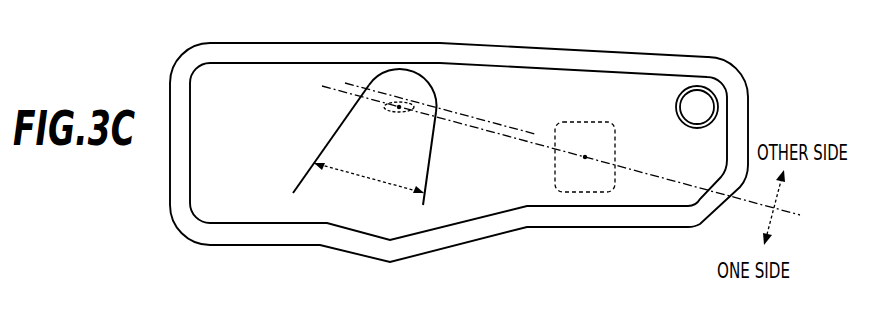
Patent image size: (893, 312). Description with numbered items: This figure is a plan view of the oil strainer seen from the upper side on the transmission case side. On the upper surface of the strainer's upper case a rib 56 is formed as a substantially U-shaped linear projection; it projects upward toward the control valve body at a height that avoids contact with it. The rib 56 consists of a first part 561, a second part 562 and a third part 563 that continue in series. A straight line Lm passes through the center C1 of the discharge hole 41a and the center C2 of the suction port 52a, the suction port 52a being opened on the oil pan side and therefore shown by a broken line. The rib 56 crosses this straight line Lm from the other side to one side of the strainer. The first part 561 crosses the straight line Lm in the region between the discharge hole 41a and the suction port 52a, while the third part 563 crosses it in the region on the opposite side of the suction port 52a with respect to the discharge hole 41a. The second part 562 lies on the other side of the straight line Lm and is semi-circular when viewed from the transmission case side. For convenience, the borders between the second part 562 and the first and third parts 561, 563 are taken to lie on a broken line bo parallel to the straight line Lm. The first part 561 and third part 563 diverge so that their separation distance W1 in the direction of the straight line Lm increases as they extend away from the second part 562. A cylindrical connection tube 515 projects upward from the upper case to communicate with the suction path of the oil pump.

The rib 56 is at (444, 81).
The second part 562 is at (406, 70).
The third part 563 is at (338, 129).
The first part 561 is at (428, 174).
The discharge hole 41a is at (400, 112).
The center of the discharge hole C1 is at (411, 108).
The straight line Lm is at (545, 142).
The broken line bo is at (514, 131).
The separation distance W1 is at (369, 185).
The suction port 52a is at (615, 138).
The center of the suction port C2 is at (584, 155).
The connection tube 515 is at (684, 87).